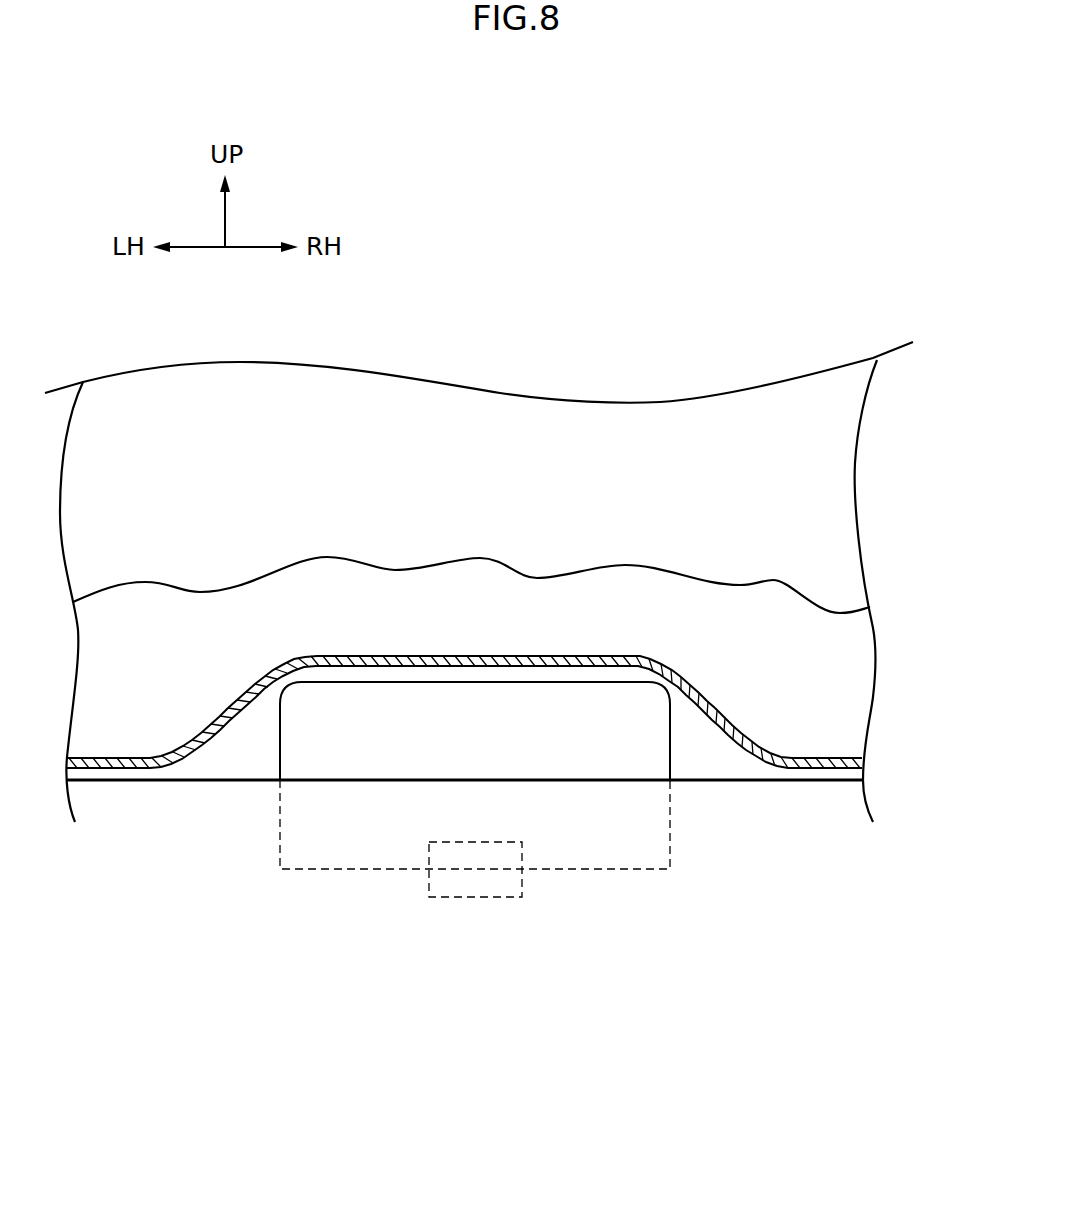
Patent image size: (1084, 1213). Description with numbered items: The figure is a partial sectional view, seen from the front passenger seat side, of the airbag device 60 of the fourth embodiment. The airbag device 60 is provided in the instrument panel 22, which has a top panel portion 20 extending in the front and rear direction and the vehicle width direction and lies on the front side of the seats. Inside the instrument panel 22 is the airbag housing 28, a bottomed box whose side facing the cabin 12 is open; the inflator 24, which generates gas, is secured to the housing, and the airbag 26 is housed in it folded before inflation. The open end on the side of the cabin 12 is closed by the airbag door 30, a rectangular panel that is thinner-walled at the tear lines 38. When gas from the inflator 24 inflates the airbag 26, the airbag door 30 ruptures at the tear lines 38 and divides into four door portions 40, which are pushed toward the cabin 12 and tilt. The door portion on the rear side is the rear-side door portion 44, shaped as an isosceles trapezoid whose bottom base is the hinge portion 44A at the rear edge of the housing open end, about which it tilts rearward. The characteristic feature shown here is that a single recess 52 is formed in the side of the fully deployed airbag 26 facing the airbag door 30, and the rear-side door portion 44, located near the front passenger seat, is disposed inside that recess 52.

The cabin 12 is at (513, 325).
The top panel portion 20 is at (614, 856).
The instrument panel 22 is at (720, 780).
The inflator 24 is at (475, 897).
The airbag 26 is at (818, 503).
The airbag housing 28 is at (670, 828).
The airbag door 30 is at (357, 753).
The tear lines 38 is at (552, 870).
The door portions 40 is at (427, 757).
The rear-side door portion 44 is at (475, 890).
The hinge portion 44A is at (572, 780).
The recess 52 is at (458, 665).
The airbag device 60 is at (613, 245).